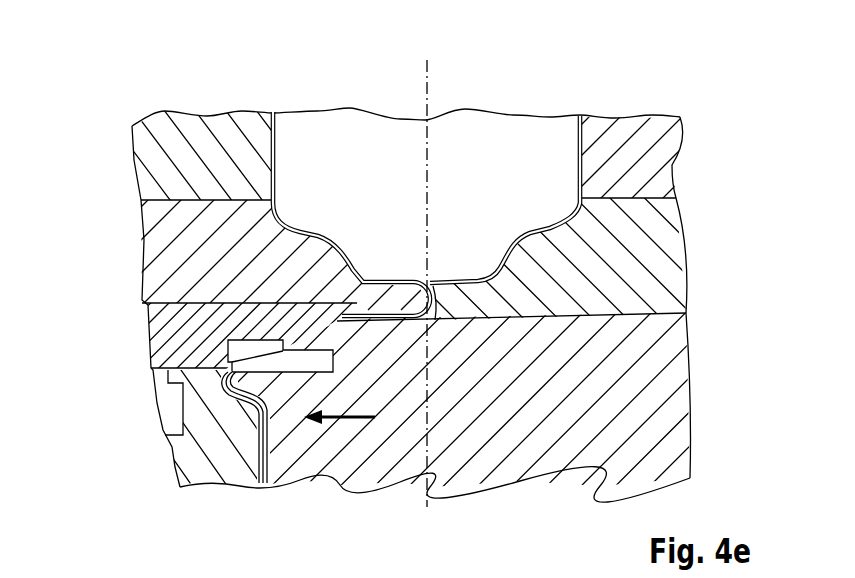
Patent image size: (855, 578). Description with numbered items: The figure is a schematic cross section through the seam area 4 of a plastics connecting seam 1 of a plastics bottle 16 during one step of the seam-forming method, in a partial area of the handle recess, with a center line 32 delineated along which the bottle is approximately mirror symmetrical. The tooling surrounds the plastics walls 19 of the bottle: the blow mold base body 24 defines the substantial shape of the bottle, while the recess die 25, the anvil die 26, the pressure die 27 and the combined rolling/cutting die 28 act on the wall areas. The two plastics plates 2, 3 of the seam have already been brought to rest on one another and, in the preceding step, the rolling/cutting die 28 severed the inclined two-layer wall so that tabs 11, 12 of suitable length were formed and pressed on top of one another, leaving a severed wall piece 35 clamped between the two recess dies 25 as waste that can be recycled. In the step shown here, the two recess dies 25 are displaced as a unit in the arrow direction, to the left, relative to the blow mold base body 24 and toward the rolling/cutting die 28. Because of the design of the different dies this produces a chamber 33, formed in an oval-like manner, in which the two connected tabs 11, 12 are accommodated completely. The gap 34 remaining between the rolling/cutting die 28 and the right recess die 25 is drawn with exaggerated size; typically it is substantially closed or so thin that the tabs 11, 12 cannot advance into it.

The plastics connecting seam 1 is at (413, 258).
The plastics plate 2 is at (326, 244).
The plastics plate 3 is at (531, 223).
The seam area 4 is at (440, 258).
The tab 11 is at (380, 322).
The tab 12 is at (364, 312).
The plastics bottle 16 is at (286, 134).
The plastics wall 19 is at (277, 165).
The blow mold base body 24 is at (162, 146).
The recess die 25 is at (192, 450).
The anvil die 26 is at (652, 259).
The pressure die 27 is at (173, 274).
The rolling/cutting die 28 is at (194, 345).
The center line 32 is at (427, 86).
The chamber 33 is at (353, 300).
The gap 34 is at (297, 335).
The wall piece 35 is at (273, 455).